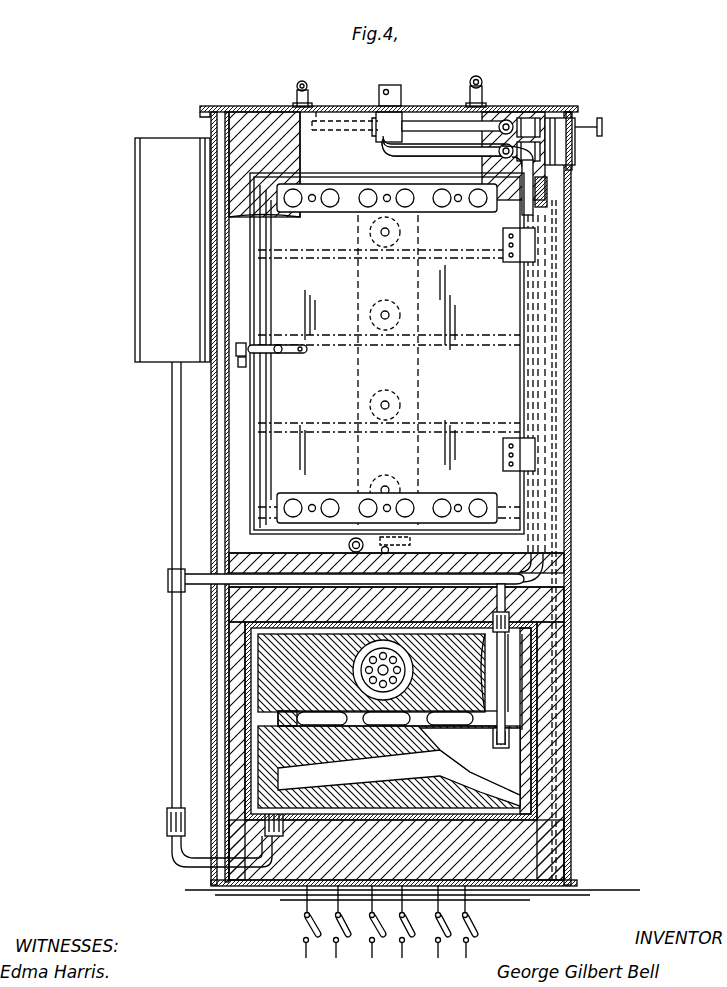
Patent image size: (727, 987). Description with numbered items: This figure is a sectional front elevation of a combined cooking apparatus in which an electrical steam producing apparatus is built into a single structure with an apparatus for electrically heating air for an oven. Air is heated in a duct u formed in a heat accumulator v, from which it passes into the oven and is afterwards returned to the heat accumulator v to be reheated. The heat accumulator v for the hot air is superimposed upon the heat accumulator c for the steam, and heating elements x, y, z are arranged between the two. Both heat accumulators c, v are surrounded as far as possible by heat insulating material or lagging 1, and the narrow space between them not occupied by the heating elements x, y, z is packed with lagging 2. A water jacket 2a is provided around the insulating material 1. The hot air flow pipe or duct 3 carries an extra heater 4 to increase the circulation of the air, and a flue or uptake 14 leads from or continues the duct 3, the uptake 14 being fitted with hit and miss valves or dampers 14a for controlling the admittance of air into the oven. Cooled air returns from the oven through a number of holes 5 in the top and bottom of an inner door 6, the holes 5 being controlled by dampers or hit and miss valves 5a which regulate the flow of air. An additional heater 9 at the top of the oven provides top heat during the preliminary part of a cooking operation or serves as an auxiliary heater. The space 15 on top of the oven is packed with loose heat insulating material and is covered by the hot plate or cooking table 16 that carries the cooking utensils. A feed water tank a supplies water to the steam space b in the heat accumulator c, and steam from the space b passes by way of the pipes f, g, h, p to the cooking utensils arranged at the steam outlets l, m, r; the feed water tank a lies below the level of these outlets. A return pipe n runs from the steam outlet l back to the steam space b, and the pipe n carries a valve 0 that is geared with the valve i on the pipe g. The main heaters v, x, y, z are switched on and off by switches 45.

The feed water tank a is at (172, 250).
The steam outlet m is at (304, 76).
The steam pipe h is at (349, 118).
The steam outlet l is at (397, 88).
The steam pipe g is at (420, 121).
The space on top of the oven 15 is at (437, 148).
The return pipe n is at (477, 80).
The steam outlet r is at (480, 108).
The steam pipe p is at (514, 111).
The valve i is at (533, 114).
The hot plate or cooking table 16 is at (575, 118).
The valve 0 is at (520, 165).
The additional heater 9 is at (377, 174).
The holes 5 is at (330, 200).
The dampers or hit and miss valves 5a is at (422, 206).
The hit and miss valves or dampers 14a is at (395, 300).
The inner door 6 is at (389, 384).
The flue or uptake 14 is at (401, 370).
The water jacket 2a is at (567, 369).
The hot air flow pipe or duct 3 is at (417, 548).
The steam pipe f is at (515, 603).
The extra heater 4 is at (395, 598).
The heat accumulator v is at (272, 667).
The heating element x is at (293, 704).
The lagging 2 is at (260, 722).
The heat insulating material or lagging 1 is at (529, 680).
The duct u is at (531, 694).
The heating element y is at (385, 732).
The heating element z is at (492, 740).
The steam space b is at (399, 767).
The heat accumulator c is at (545, 795).
The switches 45 is at (304, 920).